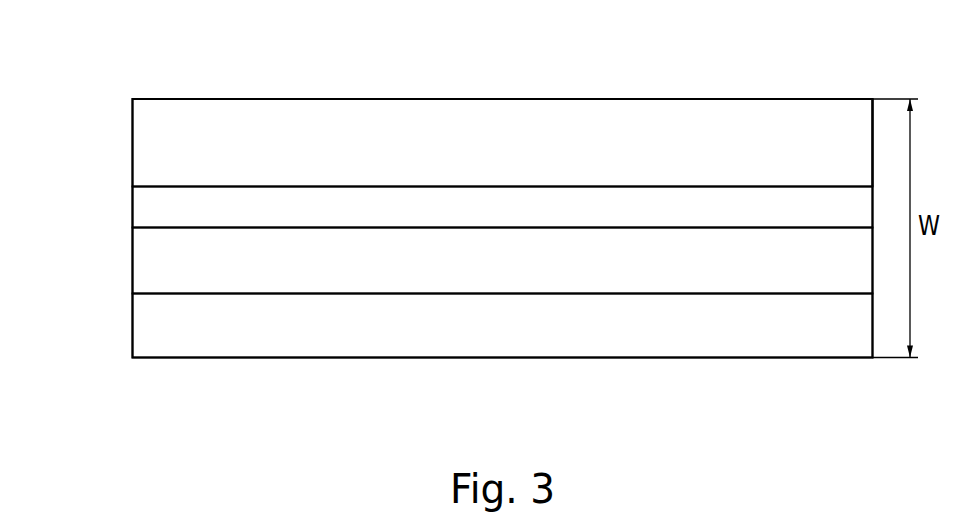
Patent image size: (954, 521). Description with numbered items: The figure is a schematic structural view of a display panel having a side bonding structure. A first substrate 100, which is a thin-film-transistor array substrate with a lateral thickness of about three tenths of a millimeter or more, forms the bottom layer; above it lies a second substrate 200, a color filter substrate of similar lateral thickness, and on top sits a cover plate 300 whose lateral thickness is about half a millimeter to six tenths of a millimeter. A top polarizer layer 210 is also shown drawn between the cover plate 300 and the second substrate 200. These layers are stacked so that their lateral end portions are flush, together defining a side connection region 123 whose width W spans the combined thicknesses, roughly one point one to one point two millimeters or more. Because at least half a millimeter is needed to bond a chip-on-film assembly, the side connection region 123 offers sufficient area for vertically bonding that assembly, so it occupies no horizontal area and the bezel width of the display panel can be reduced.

The cover plate 300 is at (165, 144).
The top polarizer 210 is at (165, 211).
The second substrate 200 is at (165, 266).
The first substrate 100 is at (165, 331).
The side connection region 123 is at (873, 140).